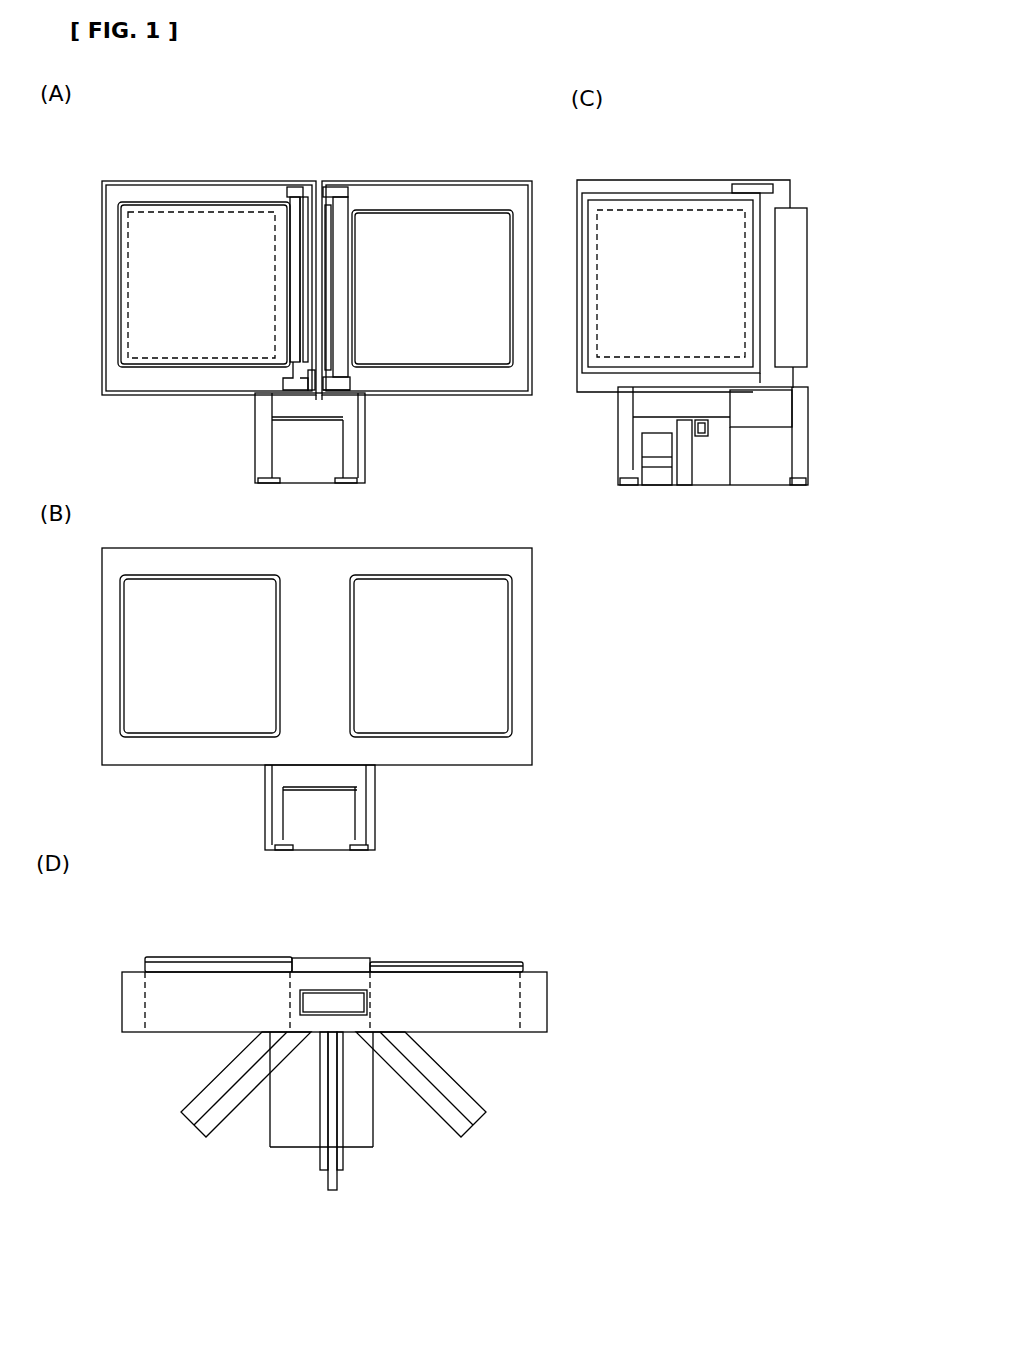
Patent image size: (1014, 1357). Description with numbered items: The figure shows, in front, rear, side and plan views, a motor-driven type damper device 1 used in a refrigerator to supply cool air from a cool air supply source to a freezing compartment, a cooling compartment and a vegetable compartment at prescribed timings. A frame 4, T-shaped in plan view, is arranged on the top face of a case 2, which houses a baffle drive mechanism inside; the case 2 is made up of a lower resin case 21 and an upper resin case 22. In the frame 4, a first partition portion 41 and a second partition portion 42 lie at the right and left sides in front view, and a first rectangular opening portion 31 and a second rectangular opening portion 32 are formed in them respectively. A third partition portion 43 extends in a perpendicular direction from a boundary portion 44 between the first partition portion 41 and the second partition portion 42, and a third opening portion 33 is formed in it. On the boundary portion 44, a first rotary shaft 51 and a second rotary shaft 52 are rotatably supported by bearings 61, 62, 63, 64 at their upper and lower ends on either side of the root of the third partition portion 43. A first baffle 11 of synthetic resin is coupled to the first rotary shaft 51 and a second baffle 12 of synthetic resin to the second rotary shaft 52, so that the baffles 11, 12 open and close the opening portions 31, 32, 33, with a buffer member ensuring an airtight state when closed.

The motor-driven type damper device 1 is at (282, 136).
The case 2 is at (178, 408).
The frame 4 is at (525, 90).
The first baffle 11 is at (350, 247).
The second baffle 12 is at (118, 244).
The lower resin case 21 is at (255, 432).
The upper resin case 22 is at (275, 403).
The first rectangular opening portion 31 is at (450, 203).
The second rectangular opening portion 32 is at (170, 200).
The third opening portion 33 is at (632, 212).
The first partition portion 41 is at (445, 183).
The second partition portion 42 is at (287, 182).
The third partition portion 43 is at (347, 193).
The boundary portion 44 is at (358, 378).
The first rotary shaft 51 is at (337, 268).
The second rotary shaft 52 is at (297, 258).
The bearing 61 is at (338, 197).
The bearing 62 is at (352, 386).
The bearing 63 is at (300, 198).
The bearing 64 is at (287, 385).